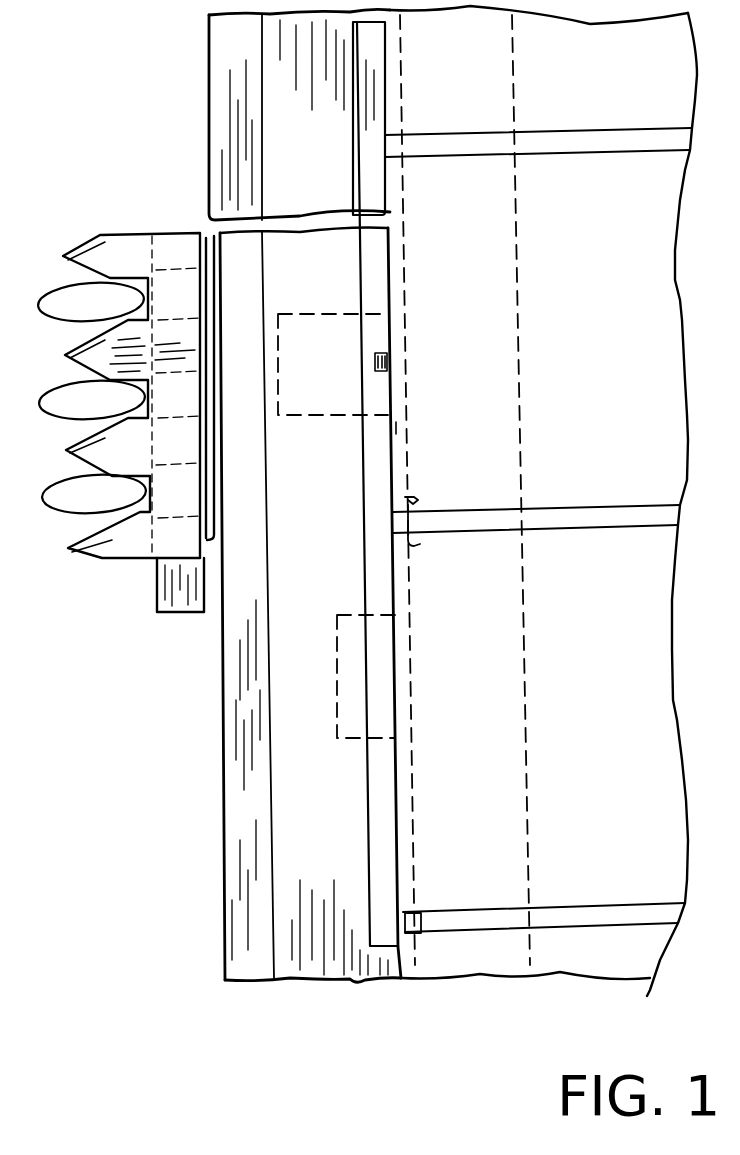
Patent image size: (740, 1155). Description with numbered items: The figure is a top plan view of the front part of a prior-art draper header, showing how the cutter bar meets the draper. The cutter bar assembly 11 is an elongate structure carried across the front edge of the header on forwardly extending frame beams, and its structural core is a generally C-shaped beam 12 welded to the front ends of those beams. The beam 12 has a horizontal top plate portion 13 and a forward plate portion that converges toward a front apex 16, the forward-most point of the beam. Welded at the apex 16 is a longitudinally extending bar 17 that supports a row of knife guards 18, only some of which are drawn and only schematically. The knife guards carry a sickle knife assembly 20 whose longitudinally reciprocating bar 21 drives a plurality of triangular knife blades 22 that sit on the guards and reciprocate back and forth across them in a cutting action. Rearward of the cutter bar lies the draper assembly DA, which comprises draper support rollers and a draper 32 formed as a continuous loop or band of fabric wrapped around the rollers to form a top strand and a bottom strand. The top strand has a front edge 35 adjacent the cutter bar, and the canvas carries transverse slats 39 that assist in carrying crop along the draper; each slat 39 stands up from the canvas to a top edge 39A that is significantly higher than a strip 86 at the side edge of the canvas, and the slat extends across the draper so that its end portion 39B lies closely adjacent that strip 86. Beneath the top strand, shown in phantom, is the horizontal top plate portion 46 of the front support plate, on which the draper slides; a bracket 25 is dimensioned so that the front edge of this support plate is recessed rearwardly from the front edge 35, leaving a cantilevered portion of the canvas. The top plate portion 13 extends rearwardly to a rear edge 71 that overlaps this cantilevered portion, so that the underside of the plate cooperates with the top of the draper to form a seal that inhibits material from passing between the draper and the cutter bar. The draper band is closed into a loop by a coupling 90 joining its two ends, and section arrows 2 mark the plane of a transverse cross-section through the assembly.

The cutter bar assembly 11 is at (290, 910).
The C-shaped beam 12 is at (318, 955).
The top plate portion 13 is at (352, 958).
The front apex 16 is at (275, 945).
The longitudinally extending bar 17 is at (225, 786).
The knife guard 18 is at (85, 305).
The sickle knife assembly 20 is at (107, 437).
The longitudinally reciprocating bar 21 is at (158, 594).
The triangular knife blades 22 is at (100, 456).
The bracket 25 is at (328, 314).
The draper 32 is at (350, 130).
The front edge 35 is at (350, 183).
The transverse slats 39 is at (515, 522).
The top edge 39A is at (635, 908).
The lower rail portion 39B is at (428, 913).
The horizontal top plate portion 46 is at (500, 660).
The rear edge 71 is at (398, 428).
The strip 86 is at (415, 757).
The coupling 90 is at (413, 560).
The draper assembly DA is at (421, 495).
The section line 2- 2 is at (15, 432).